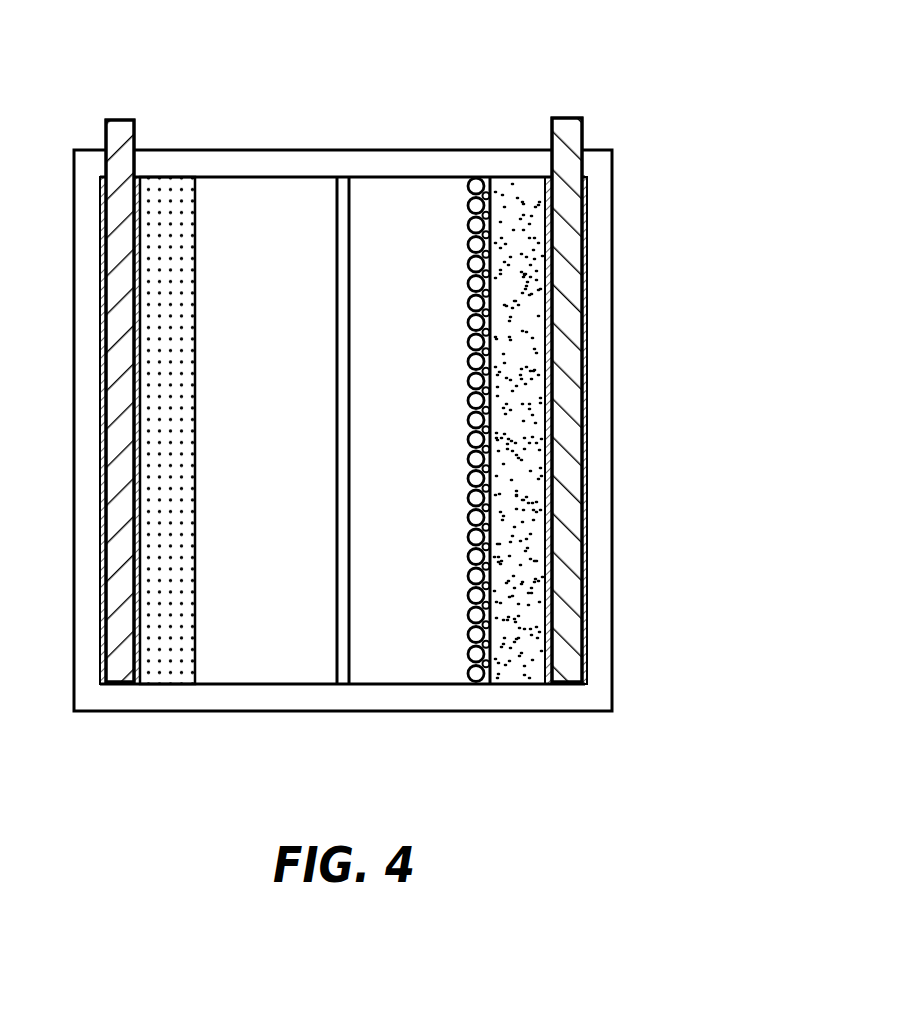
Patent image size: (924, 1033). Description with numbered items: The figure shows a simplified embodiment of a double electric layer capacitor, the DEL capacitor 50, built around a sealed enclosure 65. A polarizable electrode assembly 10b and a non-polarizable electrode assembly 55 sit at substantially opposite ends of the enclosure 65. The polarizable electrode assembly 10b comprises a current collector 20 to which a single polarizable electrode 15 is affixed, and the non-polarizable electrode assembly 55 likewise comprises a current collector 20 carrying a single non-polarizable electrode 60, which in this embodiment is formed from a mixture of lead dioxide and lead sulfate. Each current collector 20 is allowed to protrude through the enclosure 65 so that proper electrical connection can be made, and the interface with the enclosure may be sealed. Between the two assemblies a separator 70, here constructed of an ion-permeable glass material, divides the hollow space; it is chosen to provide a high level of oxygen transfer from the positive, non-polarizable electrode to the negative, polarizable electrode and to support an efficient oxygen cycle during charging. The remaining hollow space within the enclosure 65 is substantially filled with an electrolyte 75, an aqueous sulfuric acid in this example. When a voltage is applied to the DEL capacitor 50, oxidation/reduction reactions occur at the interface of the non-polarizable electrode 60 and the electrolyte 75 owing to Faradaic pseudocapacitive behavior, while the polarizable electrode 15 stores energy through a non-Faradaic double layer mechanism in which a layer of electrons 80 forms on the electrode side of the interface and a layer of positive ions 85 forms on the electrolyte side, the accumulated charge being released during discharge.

The DEL capacitor 50 is at (802, 93).
The sealed enclosure 65 is at (598, 627).
The non-polarizable electrode 60 is at (172, 190).
The non-polarizable electrode assembly 55 is at (155, 696).
The current collector 20 is at (108, 697).
The electrolyte 75 is at (251, 420).
The separator 70 is at (348, 663).
The layer of electrons 80 is at (473, 583).
The layer of positive ions 85 is at (468, 570).
The polarizable electrode 15 is at (518, 190).
The polarizable electrode assembly 10b is at (521, 695).